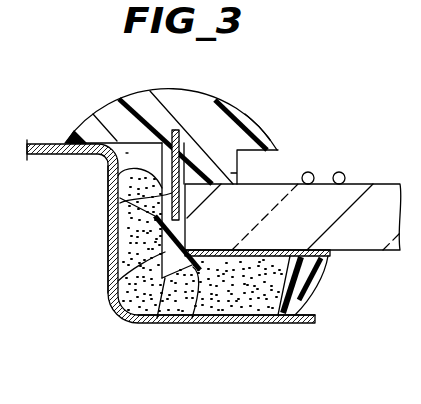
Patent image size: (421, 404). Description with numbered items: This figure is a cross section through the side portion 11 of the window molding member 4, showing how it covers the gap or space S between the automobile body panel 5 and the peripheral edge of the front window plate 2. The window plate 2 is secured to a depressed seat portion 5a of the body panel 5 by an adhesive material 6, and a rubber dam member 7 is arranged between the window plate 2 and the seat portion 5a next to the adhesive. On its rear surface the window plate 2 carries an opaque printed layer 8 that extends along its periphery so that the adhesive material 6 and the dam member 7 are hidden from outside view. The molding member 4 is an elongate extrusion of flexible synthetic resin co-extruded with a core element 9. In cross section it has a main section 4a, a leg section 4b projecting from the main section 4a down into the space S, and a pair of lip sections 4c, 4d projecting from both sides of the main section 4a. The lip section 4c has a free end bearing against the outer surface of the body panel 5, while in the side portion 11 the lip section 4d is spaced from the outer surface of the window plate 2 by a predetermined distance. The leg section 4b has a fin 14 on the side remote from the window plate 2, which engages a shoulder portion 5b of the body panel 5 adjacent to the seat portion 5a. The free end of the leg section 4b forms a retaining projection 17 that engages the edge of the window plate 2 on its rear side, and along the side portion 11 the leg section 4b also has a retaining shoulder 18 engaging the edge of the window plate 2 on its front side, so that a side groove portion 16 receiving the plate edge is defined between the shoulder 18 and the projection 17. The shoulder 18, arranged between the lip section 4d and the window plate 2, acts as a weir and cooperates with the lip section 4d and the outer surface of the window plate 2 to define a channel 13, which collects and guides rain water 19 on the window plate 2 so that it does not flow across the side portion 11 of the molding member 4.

The front window plate 2 is at (375, 183).
The window molding member 4 is at (192, 93).
The main section 4a is at (155, 100).
The leg section 4b is at (152, 324).
The lip section 4c is at (115, 102).
The lip section 4d is at (245, 107).
The automobile body panel 5 is at (40, 146).
The seat portion 5a is at (265, 325).
The shoulder portion 5b is at (108, 262).
The adhesive material 6 is at (232, 297).
The rubber dam member 7 is at (312, 287).
The opaque printed layer 8 is at (330, 255).
The core element 9 is at (118, 196).
The side portion 11 is at (255, 115).
The channel 13 is at (262, 157).
The fin 14 is at (125, 210).
The side groove portion 16 is at (112, 282).
The retaining projection 17 is at (190, 324).
The retaining shoulder 18 is at (237, 173).
The rain water 19 is at (342, 172).
The space S is at (128, 153).